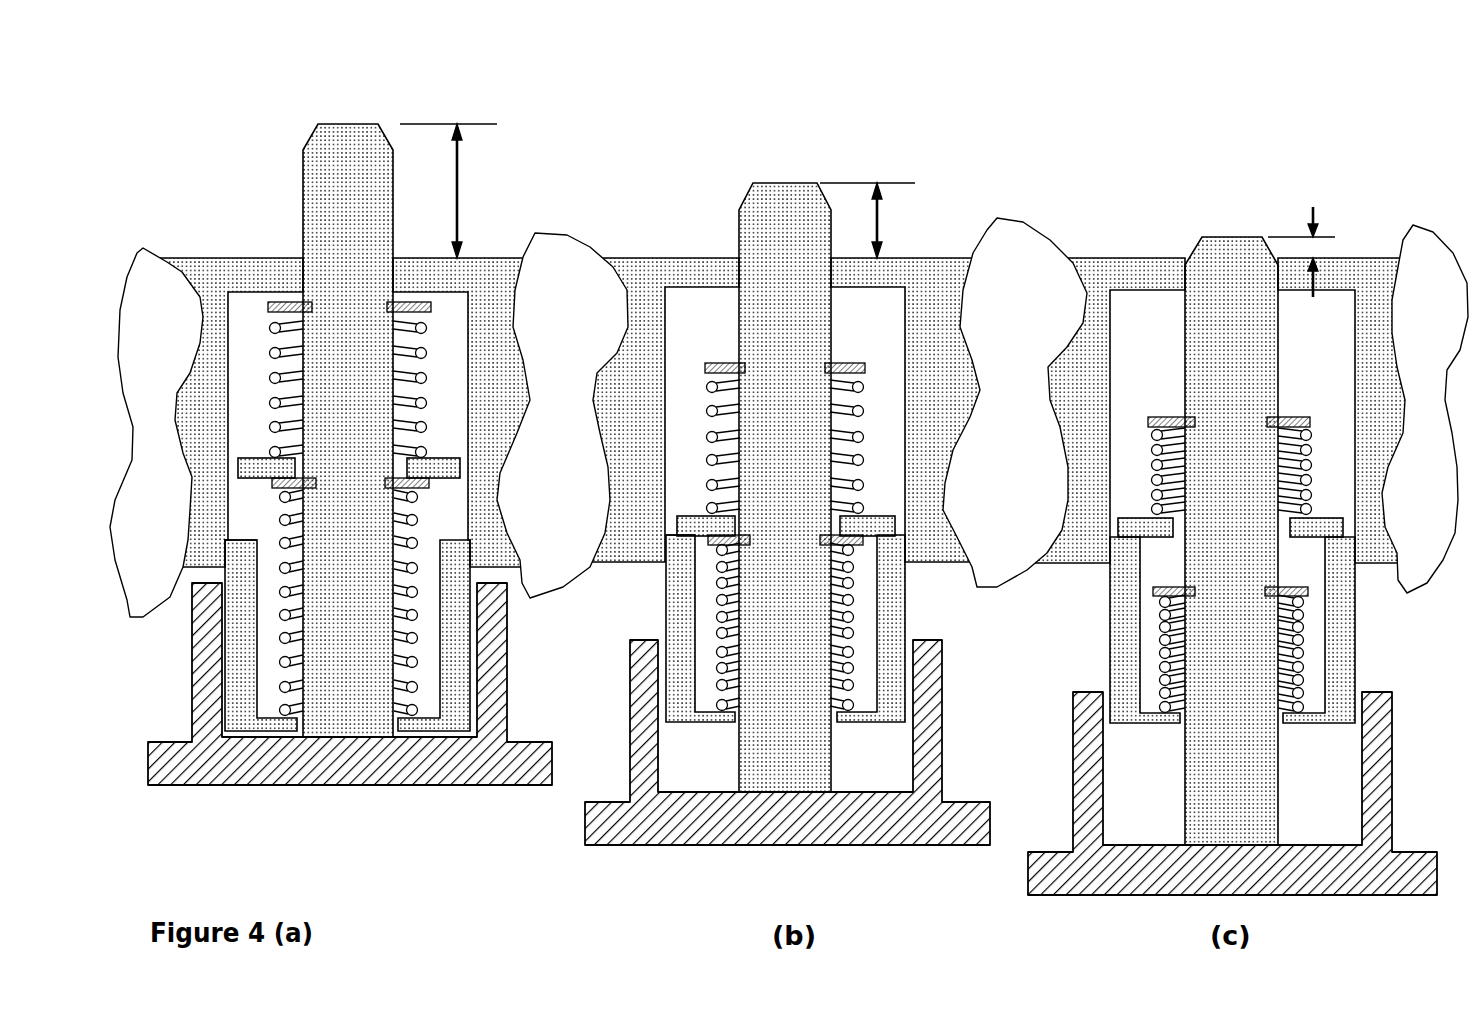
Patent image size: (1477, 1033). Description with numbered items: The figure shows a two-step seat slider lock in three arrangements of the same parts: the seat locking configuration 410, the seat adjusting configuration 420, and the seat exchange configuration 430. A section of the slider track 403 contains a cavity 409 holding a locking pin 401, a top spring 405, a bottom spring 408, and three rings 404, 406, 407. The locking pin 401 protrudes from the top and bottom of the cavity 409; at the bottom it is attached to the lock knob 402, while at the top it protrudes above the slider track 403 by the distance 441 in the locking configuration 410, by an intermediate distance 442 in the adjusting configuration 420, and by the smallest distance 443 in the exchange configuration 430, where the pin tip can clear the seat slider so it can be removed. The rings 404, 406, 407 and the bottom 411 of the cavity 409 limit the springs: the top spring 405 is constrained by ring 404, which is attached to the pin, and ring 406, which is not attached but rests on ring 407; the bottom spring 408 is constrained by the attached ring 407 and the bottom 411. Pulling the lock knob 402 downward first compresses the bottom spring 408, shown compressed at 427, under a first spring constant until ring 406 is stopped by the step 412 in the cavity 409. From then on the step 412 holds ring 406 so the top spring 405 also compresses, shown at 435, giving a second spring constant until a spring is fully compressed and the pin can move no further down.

The locking pin 401 is at (313, 208).
The lock knob 402 is at (275, 787).
The slider track 403 is at (215, 280).
The ring 404 is at (413, 300).
The top spring 405 is at (427, 337).
The ring 406 is at (450, 467).
The ring 407 is at (413, 482).
The bottom spring 408 is at (418, 567).
The cavity 409 is at (432, 690).
The seat locking configuration 410 is at (357, 468).
The bottom of cavity 411 is at (275, 718).
The step 412 is at (238, 540).
The seat adjusting configuration 420 is at (805, 451).
The compressed bottom spring 427 is at (853, 593).
The seat exchange configuration 430 is at (1216, 476).
The compressed top spring 435 is at (1150, 430).
The protruding distance 441 is at (462, 190).
The intermediate protruding distance 442 is at (882, 222).
The smallest protruding distance 443 is at (1318, 248).